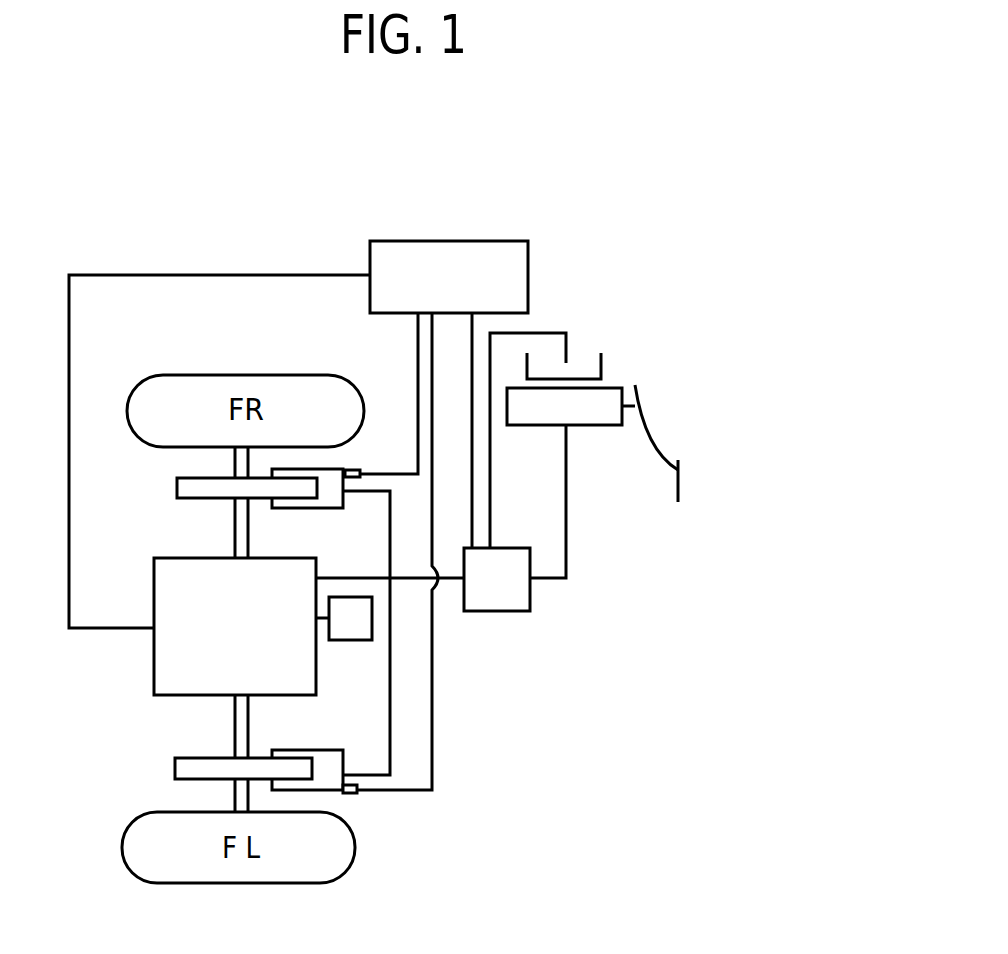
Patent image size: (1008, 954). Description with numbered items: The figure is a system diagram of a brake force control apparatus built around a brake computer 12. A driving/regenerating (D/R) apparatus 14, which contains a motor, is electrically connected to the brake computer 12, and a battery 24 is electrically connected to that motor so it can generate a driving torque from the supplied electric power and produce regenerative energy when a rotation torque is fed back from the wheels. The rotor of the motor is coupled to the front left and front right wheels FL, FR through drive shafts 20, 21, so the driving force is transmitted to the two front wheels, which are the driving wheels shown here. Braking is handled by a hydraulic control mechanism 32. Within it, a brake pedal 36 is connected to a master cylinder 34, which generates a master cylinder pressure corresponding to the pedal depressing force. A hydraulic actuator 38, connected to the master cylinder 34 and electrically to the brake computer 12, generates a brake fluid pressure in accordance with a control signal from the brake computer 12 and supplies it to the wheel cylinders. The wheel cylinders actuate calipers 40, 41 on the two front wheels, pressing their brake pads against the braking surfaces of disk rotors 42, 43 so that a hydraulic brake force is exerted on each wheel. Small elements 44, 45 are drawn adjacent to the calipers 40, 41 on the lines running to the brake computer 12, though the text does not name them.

The brake computer 12 is at (443, 241).
The driving/regenerating (D/R) apparatus 14 is at (170, 588).
The drive shaft 20 is at (242, 722).
The drive shaft 21 is at (237, 460).
The battery 24 is at (350, 640).
The hydraulic control mechanism 32 is at (662, 517).
The master cylinder 34 is at (603, 408).
The brake pedal 36 is at (668, 458).
The hydraulic actuator 38 is at (493, 602).
The caliper 40 is at (327, 782).
The caliper 41 is at (327, 508).
The disk rotor 42 is at (190, 767).
The disk rotor 43 is at (177, 490).
The wheel speed sensor (FL) 44 is at (357, 793).
The wheel speed sensor (FR) 45 is at (352, 470).